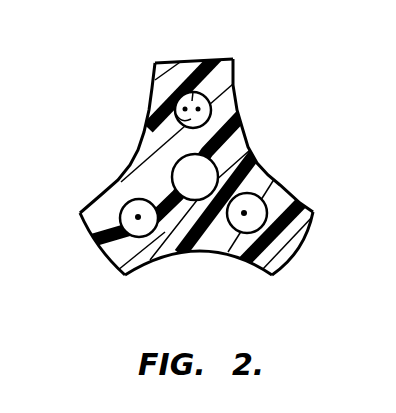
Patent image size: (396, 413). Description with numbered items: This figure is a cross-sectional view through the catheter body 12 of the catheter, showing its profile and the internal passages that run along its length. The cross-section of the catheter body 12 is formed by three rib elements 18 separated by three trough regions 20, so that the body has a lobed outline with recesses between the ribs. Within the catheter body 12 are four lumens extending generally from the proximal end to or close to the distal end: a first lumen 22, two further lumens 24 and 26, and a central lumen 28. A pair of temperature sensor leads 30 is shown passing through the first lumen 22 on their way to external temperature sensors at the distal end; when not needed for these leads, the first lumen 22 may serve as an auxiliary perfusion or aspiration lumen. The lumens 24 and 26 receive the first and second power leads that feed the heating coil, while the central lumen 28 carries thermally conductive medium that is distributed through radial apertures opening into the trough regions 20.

The catheter body 12 is at (234, 72).
The rib elements 18 is at (166, 60).
The trough regions 20 is at (116, 125).
The first lumen 22 is at (193, 93).
The lumen 24 is at (122, 223).
The lumen 26 is at (250, 216).
The central lumen 28 is at (203, 180).
The temperature sensor leads 30 is at (174, 110).